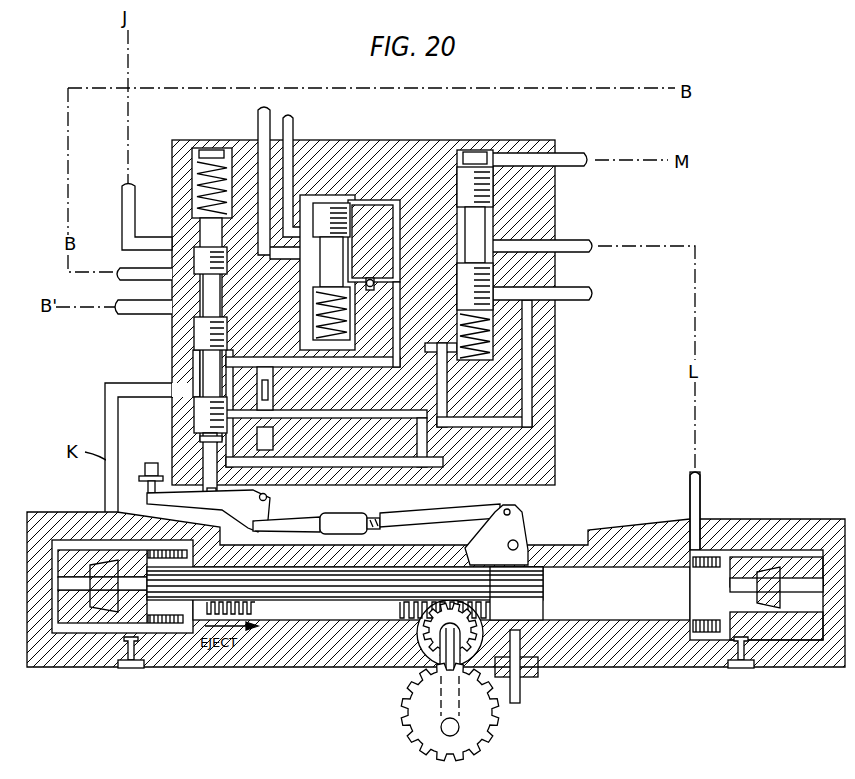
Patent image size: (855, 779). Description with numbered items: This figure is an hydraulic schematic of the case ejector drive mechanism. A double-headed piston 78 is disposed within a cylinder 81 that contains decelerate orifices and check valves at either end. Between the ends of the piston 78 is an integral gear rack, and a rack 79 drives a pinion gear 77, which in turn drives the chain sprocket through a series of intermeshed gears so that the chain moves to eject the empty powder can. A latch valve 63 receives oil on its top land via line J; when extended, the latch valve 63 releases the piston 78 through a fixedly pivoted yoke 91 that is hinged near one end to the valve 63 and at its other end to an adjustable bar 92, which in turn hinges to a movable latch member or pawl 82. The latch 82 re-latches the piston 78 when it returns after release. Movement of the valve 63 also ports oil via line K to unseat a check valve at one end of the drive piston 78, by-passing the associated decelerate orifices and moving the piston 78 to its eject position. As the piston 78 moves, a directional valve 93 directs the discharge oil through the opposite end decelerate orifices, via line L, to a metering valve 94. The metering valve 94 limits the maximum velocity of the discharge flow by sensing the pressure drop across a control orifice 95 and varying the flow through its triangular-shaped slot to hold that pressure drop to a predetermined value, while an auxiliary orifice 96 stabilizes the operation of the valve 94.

The latch valve 63 is at (195, 335).
The directional valve 93 is at (495, 271).
The metering valve 94 is at (352, 226).
The auxiliary orifice 96 is at (302, 268).
The control orifice 95 is at (378, 282).
The yoke 91 is at (268, 512).
The adjustable bar 92 is at (400, 518).
The latch 82 is at (518, 532).
The double-headed piston 78 is at (393, 612).
The cylinder 81 is at (356, 637).
The rack 79 is at (392, 636).
The pinion gear 77 is at (422, 652).